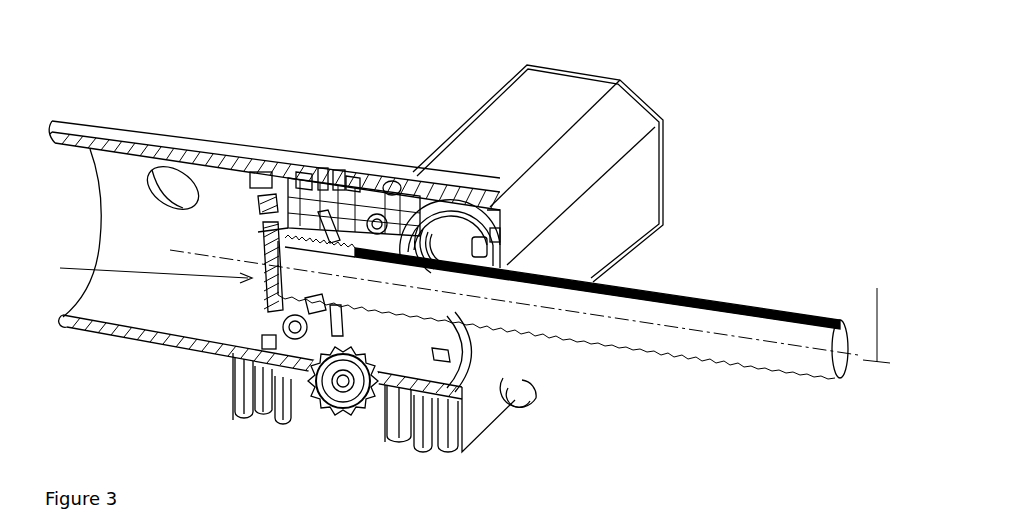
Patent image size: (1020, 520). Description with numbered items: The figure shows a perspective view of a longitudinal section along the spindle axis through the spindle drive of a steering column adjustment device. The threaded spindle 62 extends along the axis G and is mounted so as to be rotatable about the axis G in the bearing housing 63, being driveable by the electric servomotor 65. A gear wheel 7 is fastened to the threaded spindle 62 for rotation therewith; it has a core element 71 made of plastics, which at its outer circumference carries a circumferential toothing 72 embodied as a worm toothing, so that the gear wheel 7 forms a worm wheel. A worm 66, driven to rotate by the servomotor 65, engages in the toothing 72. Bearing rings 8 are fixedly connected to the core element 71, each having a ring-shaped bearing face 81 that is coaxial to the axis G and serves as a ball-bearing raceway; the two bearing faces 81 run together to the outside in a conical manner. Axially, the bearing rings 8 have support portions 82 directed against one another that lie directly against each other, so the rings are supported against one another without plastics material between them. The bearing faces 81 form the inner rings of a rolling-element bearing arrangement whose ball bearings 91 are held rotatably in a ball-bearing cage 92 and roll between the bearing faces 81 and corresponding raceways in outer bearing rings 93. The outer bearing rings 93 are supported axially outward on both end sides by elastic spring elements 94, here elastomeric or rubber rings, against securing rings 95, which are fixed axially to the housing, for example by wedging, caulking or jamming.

The gear wheel 7 is at (145, 271).
The bearing ring 8 is at (307, 170).
The threaded spindle 62 is at (712, 323).
The bearing housing 63 is at (167, 138).
The electric servomotor 65 is at (488, 133).
The worm 66 is at (355, 412).
The core element 71 is at (262, 228).
The circumferential toothing 72 is at (338, 172).
The bearing face 81 is at (376, 212).
The support portion 82 is at (322, 170).
The ball bearings 91 is at (390, 178).
The ball-bearing cage 92 is at (285, 175).
The outer bearing ring 93 is at (445, 216).
The spring element 94 is at (262, 180).
The securing ring 95 is at (263, 203).
The axis G is at (876, 315).